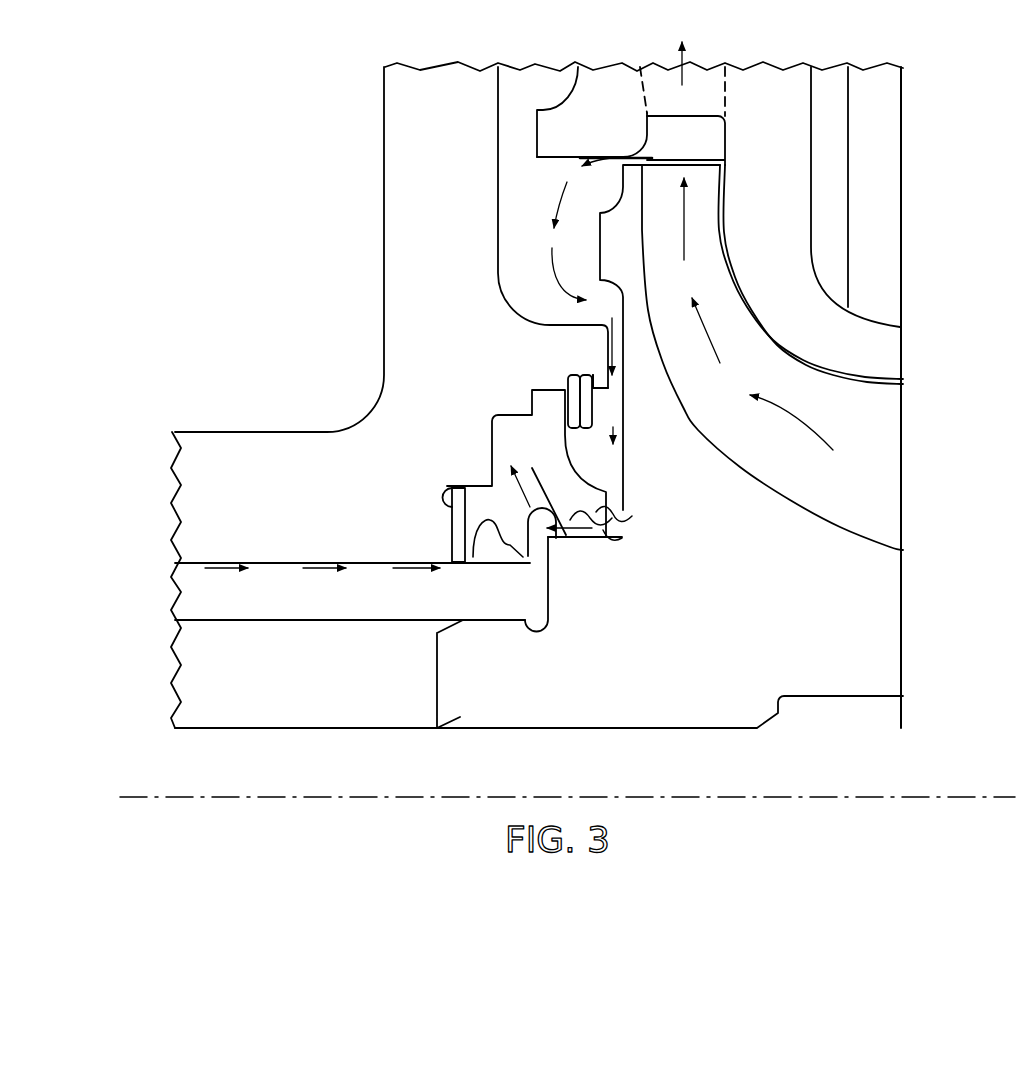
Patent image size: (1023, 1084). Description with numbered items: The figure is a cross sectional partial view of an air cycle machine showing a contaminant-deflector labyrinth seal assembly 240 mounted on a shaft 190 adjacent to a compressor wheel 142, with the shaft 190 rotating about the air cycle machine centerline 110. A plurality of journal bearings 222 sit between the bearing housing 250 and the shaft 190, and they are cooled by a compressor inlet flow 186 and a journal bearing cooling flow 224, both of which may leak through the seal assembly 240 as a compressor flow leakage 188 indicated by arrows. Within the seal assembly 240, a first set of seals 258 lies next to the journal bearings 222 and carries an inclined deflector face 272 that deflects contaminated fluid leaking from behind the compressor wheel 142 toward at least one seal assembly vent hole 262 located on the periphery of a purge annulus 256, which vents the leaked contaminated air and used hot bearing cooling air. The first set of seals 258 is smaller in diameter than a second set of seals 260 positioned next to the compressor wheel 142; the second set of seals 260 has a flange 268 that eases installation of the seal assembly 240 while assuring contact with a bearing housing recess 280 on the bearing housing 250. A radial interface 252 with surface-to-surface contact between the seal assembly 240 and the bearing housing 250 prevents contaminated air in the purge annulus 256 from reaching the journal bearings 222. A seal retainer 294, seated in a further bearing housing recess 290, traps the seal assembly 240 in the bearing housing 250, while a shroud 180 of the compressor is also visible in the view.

The air cycle machine centerline 110 is at (960, 797).
The compressor wheel 142 is at (893, 633).
The impeller shroud 180 is at (875, 322).
The compressor inlet flow 186 is at (792, 431).
The compressor flow leakage 188 is at (612, 542).
The shaft 190 is at (183, 590).
The journal bearings 222 is at (267, 563).
The journal bearing cooling flow 224 is at (327, 570).
The contaminant-deflector labyrinth seal assembly 240 is at (537, 428).
The bearing housing 250 is at (364, 190).
The radial interface 252 is at (487, 487).
The purge annulus 256 is at (568, 535).
The first set of seals 258 is at (476, 540).
The second set of seals 260 is at (613, 517).
The seal assembly vent hole 262 is at (452, 521).
The flange 268 is at (553, 398).
The inclined deflector face 272 is at (548, 550).
The bearing housing recess 280 is at (531, 379).
The bearing housing recess 290 is at (602, 403).
The seal retainer 294 is at (587, 415).